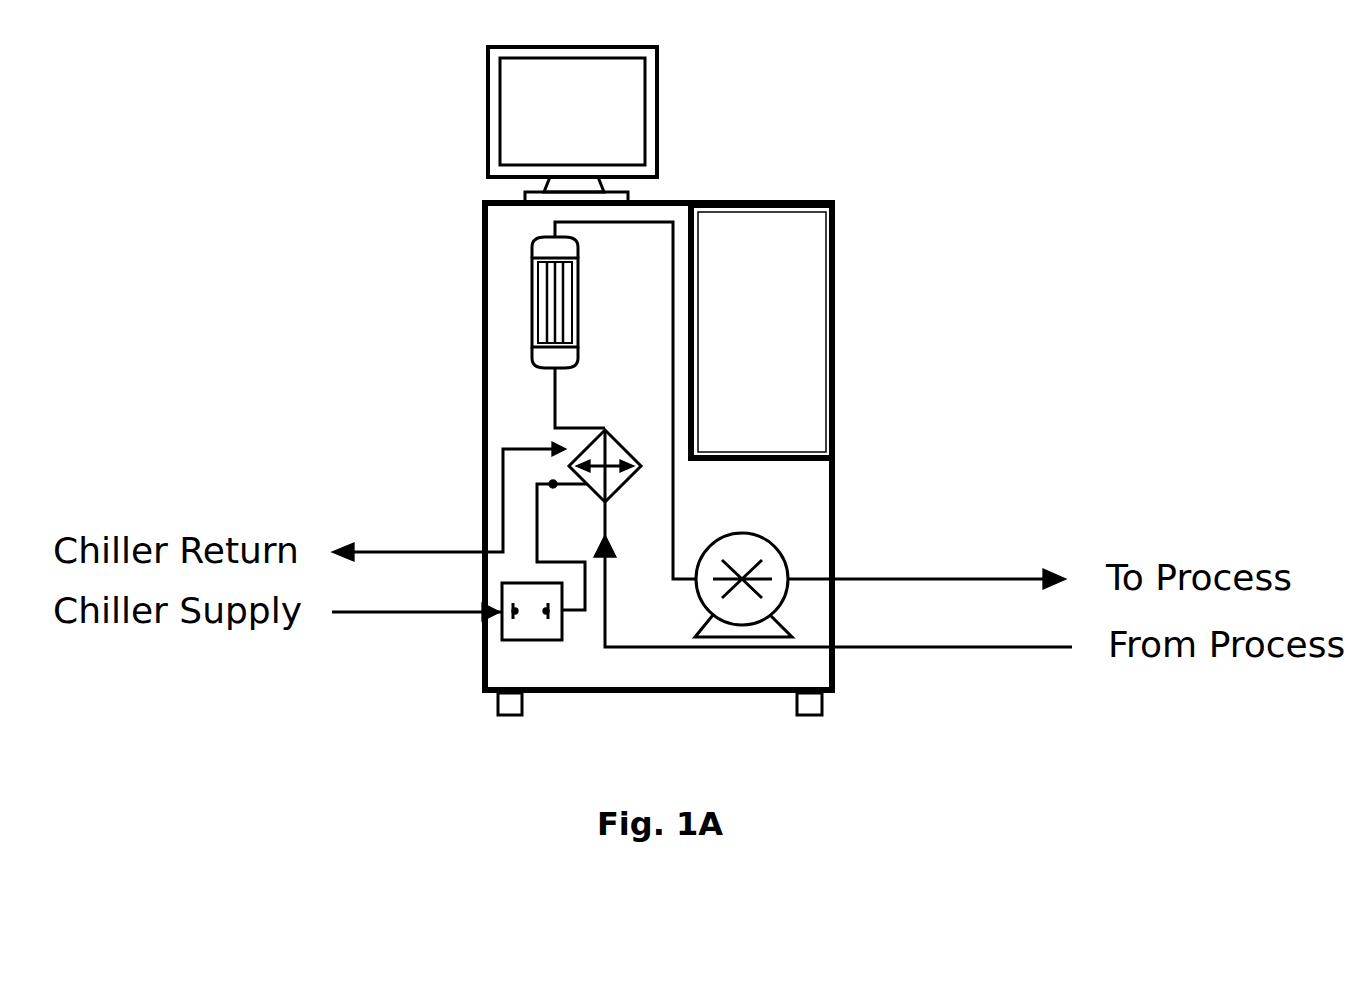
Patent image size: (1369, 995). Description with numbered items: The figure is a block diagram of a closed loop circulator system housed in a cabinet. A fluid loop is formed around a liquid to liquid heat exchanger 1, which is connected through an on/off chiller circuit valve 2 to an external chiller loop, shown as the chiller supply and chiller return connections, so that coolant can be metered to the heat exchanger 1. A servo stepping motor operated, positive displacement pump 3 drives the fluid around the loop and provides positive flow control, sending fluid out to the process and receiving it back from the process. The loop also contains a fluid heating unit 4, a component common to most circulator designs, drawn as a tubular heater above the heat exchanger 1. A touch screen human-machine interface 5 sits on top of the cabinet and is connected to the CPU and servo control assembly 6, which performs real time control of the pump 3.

The liquid to liquid heat exchanger 1 is at (625, 447).
The on/off chiller circuit valve 2 is at (531, 641).
The positive displacement pump 3 is at (790, 566).
The fluid heating unit 4 is at (532, 303).
The touch screen human-machine interface 5 is at (488, 124).
The CPU and servo control assembly 6 is at (835, 306).